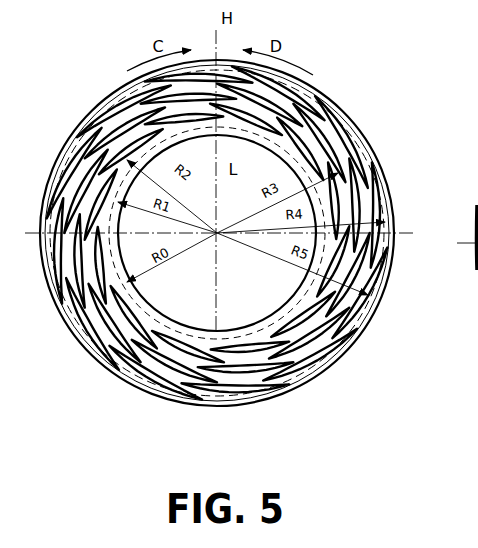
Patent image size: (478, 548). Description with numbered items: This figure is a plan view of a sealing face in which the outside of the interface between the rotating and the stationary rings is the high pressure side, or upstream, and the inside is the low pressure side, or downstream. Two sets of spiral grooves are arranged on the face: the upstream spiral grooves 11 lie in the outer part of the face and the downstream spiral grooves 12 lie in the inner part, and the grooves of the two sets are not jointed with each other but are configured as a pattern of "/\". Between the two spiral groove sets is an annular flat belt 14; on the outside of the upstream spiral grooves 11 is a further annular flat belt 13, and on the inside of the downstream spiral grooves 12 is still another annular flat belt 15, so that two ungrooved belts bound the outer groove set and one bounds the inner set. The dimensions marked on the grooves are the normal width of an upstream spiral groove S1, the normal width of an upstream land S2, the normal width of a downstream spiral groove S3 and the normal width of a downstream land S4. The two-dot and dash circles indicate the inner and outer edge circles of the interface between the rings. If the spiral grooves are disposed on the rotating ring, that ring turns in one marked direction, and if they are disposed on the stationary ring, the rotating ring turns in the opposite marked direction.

The upstream spiral grooves 11 is at (355, 190).
The downstream spiral grooves 12 is at (295, 140).
The annular flat belt 13 is at (308, 100).
The annular flat belt 14 is at (140, 143).
The annular flat belt 15 is at (123, 160).
The normal width of an upstream spiral groove S1 is at (323, 342).
The normal width of an upstream land S2 is at (297, 357).
The normal width of a downstream spiral groove S3 is at (320, 305).
The normal width of a downstream land S4 is at (321, 352).